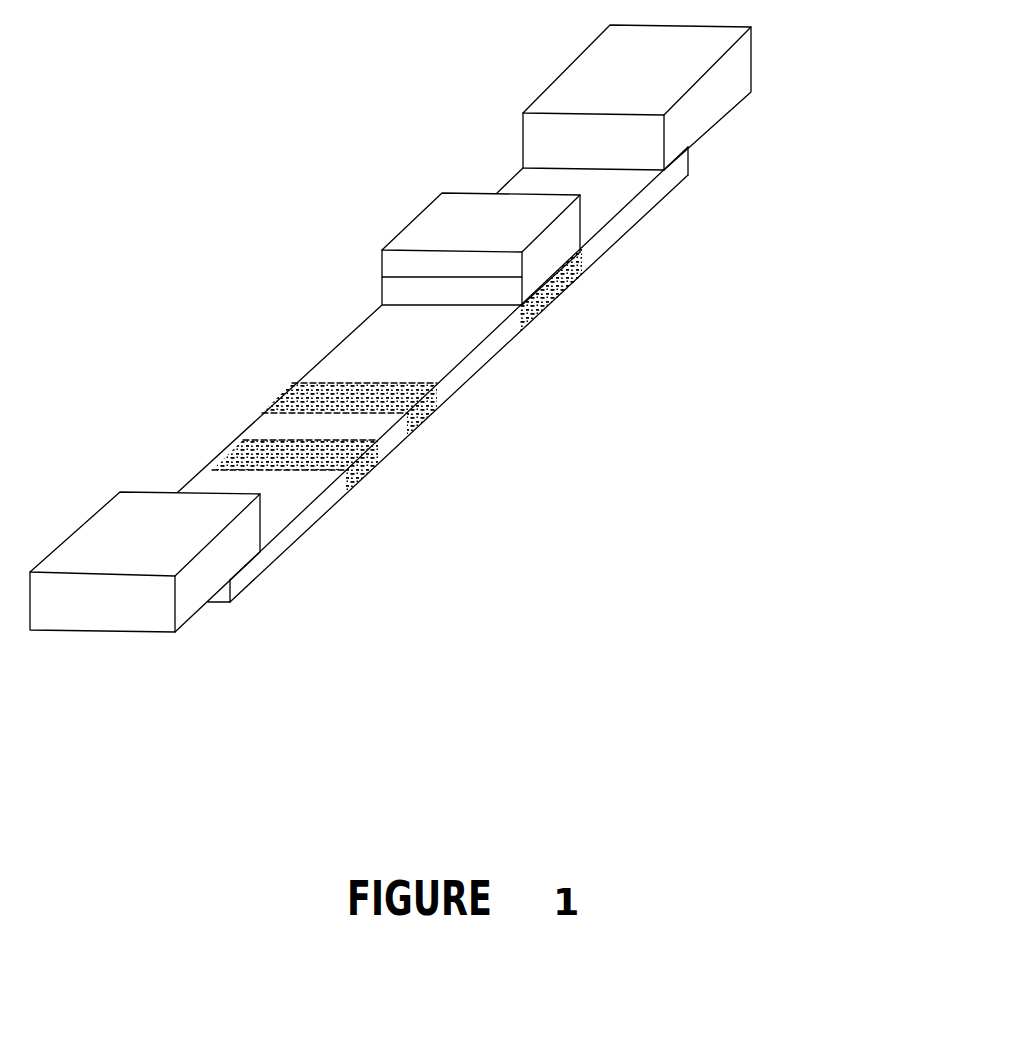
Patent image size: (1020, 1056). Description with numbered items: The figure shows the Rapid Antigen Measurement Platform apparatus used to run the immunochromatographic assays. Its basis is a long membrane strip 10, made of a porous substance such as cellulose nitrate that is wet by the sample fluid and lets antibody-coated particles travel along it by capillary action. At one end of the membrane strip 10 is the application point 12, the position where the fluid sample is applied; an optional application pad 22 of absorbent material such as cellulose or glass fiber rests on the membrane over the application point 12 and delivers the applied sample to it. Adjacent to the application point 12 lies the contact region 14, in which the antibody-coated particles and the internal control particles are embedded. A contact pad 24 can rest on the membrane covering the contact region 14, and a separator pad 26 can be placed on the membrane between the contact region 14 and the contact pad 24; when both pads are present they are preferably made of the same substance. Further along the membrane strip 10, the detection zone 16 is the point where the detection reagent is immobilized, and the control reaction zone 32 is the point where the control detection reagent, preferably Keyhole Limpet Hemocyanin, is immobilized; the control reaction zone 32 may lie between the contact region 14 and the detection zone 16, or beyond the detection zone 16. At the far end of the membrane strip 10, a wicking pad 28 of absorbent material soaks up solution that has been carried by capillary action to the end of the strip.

The membrane strip 10 is at (477, 360).
The application point 12 is at (688, 177).
The contact region 14 is at (562, 283).
The detection zone 16 is at (387, 462).
The application pad 22 is at (692, 128).
The contact pad 24 is at (562, 223).
The separator pad 26 is at (557, 252).
The wicking pad 28 is at (200, 580).
The control reaction zone 32 is at (433, 405).